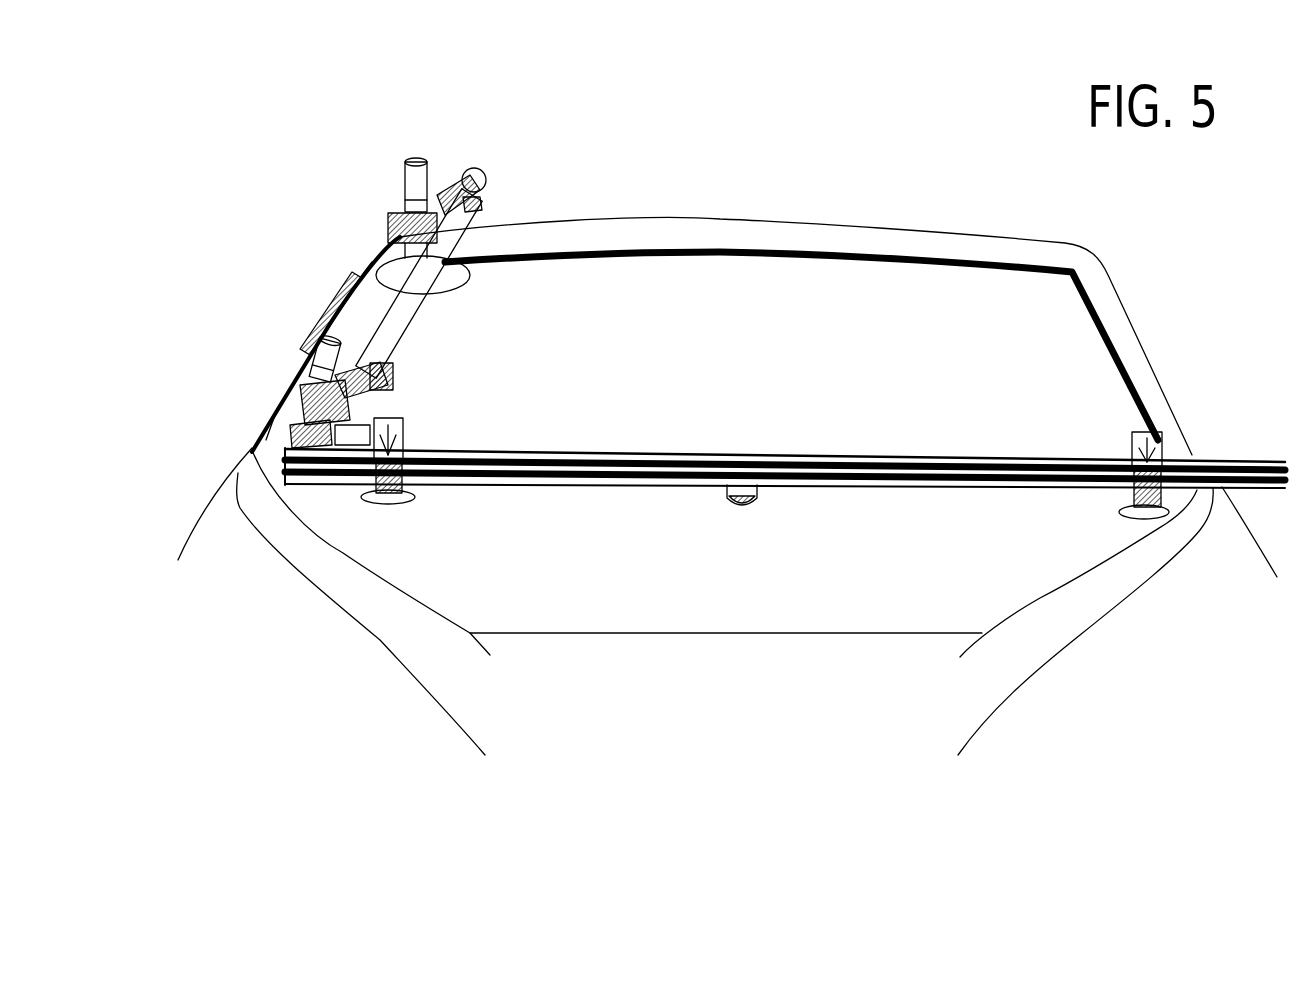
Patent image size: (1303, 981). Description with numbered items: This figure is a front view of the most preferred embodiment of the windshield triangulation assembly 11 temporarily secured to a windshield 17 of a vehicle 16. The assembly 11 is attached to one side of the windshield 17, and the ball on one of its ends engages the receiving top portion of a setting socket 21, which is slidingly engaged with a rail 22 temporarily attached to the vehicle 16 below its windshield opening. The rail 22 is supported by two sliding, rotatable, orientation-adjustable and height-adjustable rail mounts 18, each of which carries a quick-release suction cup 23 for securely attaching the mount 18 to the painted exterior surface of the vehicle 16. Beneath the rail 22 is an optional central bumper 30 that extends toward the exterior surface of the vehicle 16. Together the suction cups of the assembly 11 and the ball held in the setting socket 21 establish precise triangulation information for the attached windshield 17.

The windshield triangulation assembly 11 is at (465, 350).
The vehicle 16 is at (207, 530).
The windshield 17 is at (840, 275).
The rail mount 18 is at (437, 514).
The setting socket 21 is at (340, 440).
The rail 22 is at (913, 447).
The suction cup 23 is at (370, 504).
The central bumper 30 is at (757, 516).